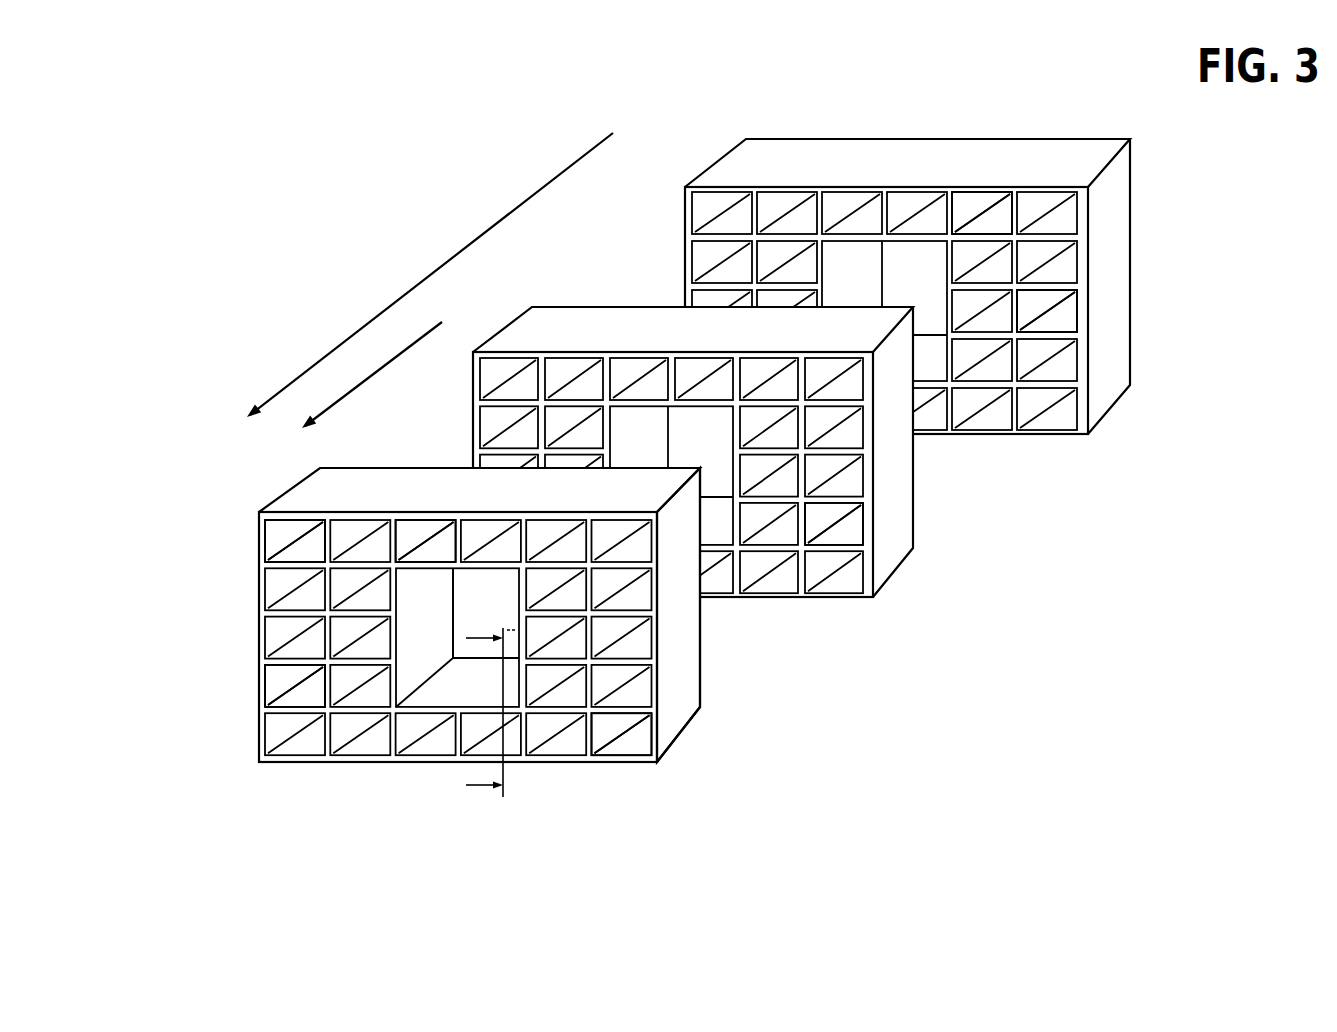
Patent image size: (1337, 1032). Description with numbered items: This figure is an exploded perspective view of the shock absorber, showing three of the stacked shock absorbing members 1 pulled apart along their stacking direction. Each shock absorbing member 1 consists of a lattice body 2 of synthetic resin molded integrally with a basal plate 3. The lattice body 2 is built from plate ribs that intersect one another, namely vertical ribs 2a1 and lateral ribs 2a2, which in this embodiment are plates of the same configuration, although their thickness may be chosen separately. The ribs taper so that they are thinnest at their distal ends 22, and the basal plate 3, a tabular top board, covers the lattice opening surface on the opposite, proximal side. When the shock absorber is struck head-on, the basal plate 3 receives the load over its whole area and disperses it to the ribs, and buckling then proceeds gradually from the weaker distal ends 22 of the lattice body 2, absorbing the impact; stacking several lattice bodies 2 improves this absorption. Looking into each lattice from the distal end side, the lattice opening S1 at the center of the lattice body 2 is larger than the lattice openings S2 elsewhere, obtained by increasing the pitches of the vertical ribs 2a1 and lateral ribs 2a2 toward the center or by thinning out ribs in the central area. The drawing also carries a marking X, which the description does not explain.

The shock absorbing member 1 is at (690, 738).
The lattice body 2 is at (323, 497).
The basal plate 3 is at (473, 582).
The distal end 22 is at (303, 557).
The vertical rib 2a1 is at (690, 665).
The lateral rib 2a2 is at (945, 103).
The lattice opening at the center S1 is at (747, 92).
The lattice opening S2 is at (1185, 320).
The cell pitch dimension X is at (490, 713).